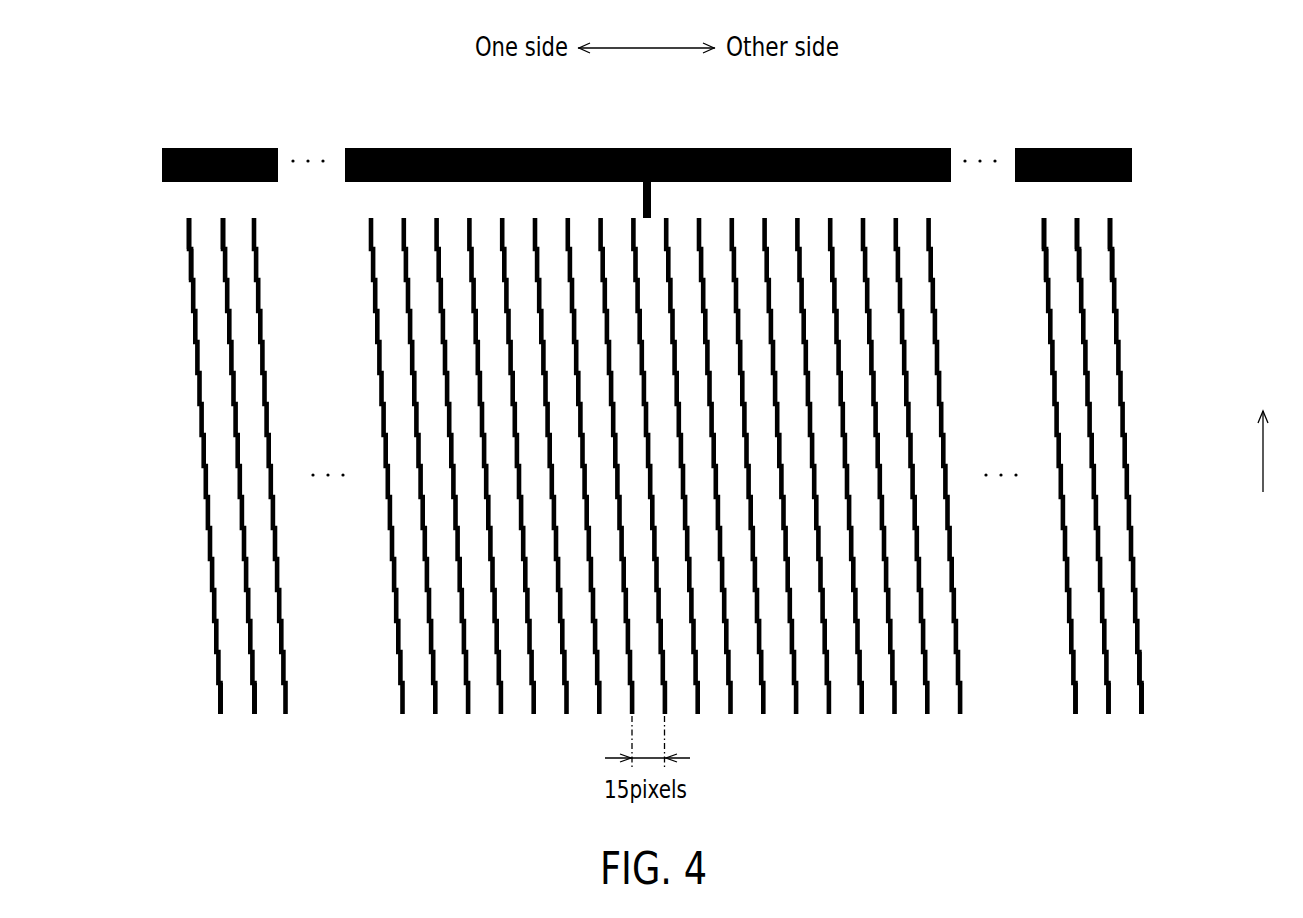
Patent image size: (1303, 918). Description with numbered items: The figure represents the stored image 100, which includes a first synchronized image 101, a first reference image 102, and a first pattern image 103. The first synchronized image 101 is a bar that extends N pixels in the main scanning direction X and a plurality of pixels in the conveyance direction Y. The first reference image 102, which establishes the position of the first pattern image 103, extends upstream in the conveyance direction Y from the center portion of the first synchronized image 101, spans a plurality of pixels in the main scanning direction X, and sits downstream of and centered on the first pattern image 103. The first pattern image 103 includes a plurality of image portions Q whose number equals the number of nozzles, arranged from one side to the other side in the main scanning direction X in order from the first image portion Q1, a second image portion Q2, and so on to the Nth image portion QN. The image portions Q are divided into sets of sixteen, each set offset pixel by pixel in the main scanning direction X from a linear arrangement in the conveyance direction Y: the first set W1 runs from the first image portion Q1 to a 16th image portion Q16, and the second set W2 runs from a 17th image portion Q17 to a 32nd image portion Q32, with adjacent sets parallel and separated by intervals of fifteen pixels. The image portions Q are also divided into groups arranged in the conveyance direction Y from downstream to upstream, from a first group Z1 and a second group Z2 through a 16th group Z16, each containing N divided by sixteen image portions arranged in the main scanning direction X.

The stored image 100 is at (912, 110).
The first synchronized image 101 is at (686, 147).
The first reference image 102 is at (652, 200).
The first pattern image 103 is at (778, 762).
The image portions Q is at (155, 477).
The first image portion Q1 is at (187, 234).
The second image portion Q2 is at (187, 268).
The 16th image portion Q16 is at (218, 700).
The 17th image portion Q17 is at (224, 232).
The 32nd image portion Q32 is at (256, 702).
The Nth image portion QN is at (1143, 710).
The first group Z1 is at (1145, 228).
The second group Z2 is at (1145, 262).
The 16th group Z16 is at (1165, 698).
The first set W1 is at (222, 742).
The second set W2 is at (257, 742).
The main scanning direction X is at (646, 30).
The conveyance direction Y is at (1271, 451).